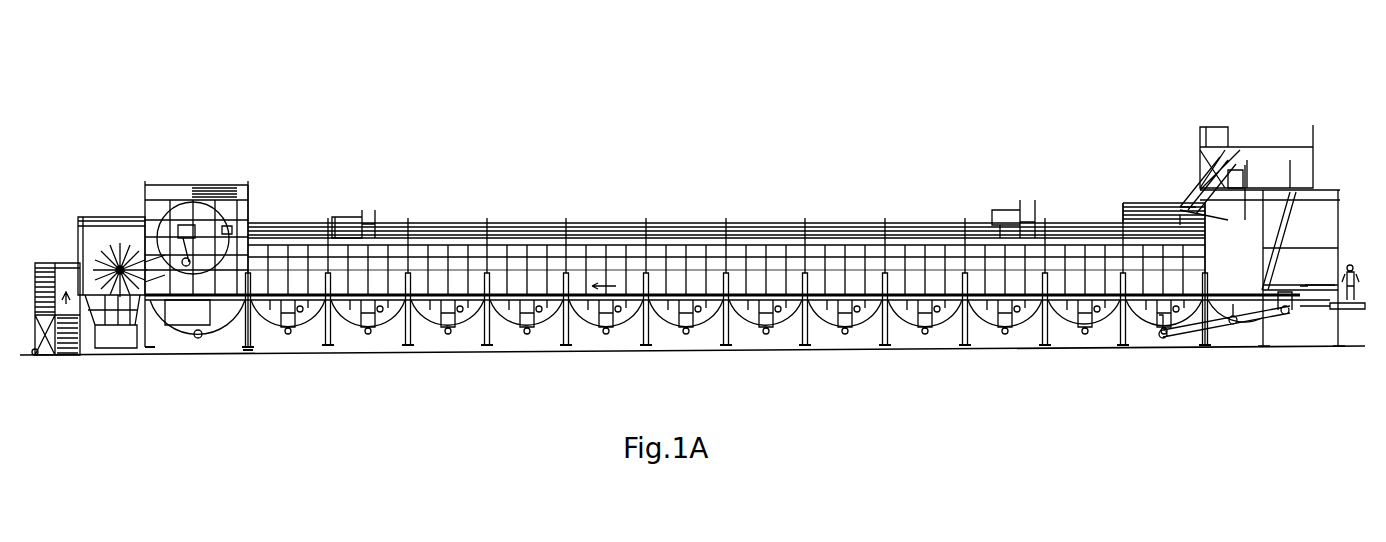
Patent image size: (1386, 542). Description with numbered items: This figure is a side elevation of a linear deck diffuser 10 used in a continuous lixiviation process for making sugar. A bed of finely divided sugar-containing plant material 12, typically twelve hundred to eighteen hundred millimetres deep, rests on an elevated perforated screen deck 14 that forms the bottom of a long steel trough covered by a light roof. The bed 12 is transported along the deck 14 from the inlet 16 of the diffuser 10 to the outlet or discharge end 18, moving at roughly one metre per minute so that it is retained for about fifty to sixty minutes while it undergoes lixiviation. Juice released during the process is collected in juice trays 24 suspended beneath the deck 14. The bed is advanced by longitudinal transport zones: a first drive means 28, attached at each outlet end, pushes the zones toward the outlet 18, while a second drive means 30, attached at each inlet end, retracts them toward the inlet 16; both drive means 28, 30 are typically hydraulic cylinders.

The linear deck diffuser 10 is at (661, 149).
The bed of finely divided sugar-containing plant material 12 is at (199, 265).
The perforated screen deck 14 is at (664, 284).
The inlet 16 is at (1280, 145).
The outlet or discharge end 18 is at (112, 230).
The juice trays 24 is at (472, 325).
The first drive means 28 is at (67, 348).
The second drive means 30 is at (1320, 290).